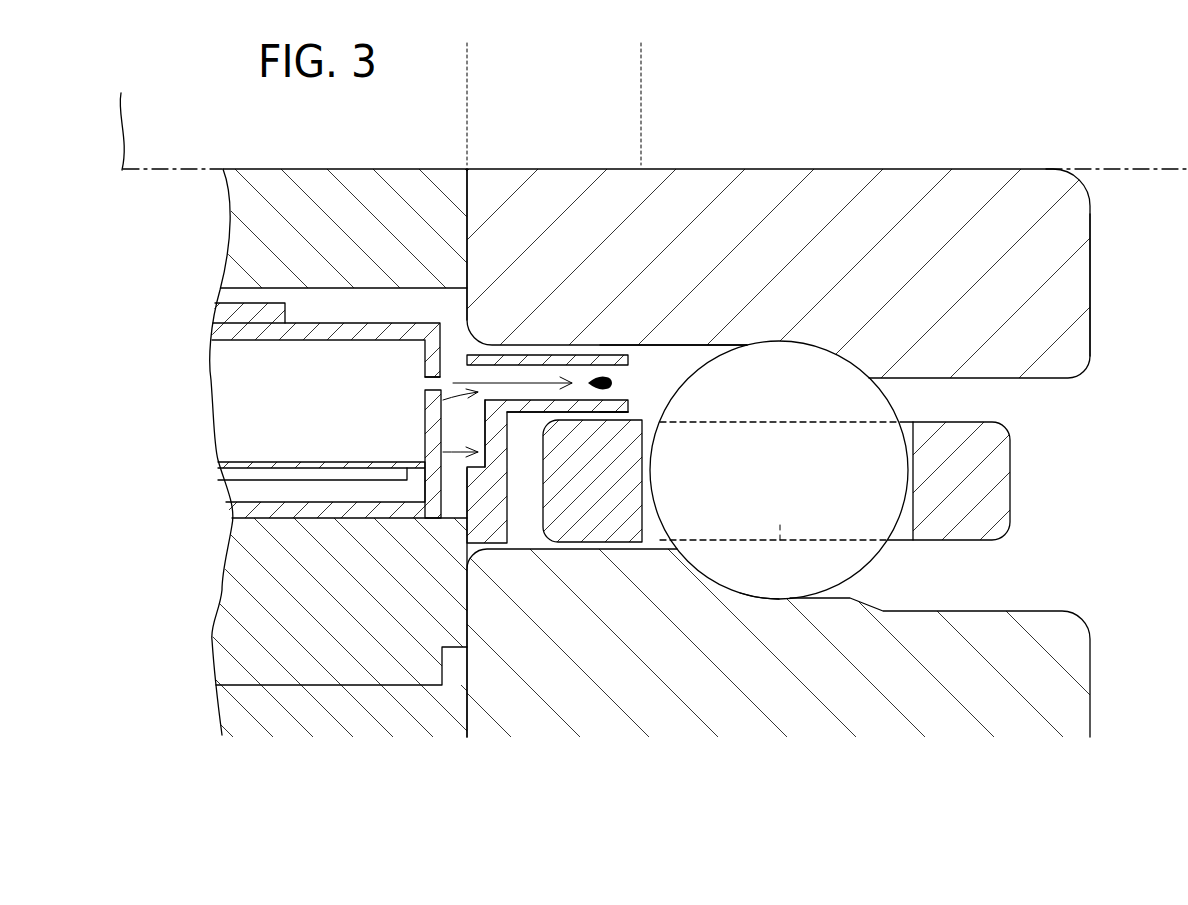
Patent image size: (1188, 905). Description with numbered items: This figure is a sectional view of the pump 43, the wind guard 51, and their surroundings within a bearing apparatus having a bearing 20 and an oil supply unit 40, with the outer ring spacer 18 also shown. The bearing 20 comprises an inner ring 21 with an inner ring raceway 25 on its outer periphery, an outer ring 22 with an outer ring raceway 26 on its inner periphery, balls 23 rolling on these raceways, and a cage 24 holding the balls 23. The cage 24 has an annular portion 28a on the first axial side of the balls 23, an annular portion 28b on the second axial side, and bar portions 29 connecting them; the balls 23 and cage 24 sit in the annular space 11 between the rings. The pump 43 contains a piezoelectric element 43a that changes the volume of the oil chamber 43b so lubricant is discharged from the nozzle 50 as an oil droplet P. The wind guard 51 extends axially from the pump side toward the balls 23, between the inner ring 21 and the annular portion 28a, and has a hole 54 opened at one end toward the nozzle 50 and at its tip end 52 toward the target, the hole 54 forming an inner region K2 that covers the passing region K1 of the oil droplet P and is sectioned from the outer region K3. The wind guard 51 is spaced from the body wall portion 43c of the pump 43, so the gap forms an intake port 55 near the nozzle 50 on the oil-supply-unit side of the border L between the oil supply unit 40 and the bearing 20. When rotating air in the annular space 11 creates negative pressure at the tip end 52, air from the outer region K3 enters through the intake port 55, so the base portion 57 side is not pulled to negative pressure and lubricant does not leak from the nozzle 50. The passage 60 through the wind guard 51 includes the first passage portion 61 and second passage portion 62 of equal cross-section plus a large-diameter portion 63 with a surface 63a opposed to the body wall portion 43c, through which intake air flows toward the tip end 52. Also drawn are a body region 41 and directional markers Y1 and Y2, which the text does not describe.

The annular space 11 is at (527, 529).
The outer ring spacer 18 is at (410, 702).
The bearing 20 is at (852, 163).
The inner ring 21 is at (1065, 278).
The outer ring 22 is at (1045, 665).
The balls 23 is at (752, 570).
The cage 24 is at (1026, 460).
The inner ring raceway 25 is at (794, 340).
The outer ring raceway 26 is at (730, 580).
The annular portion 28a is at (607, 517).
The annular portion 28b is at (993, 500).
The bar portions 29 is at (780, 540).
The oil supply unit 40 is at (322, 697).
The body portion 41 is at (383, 625).
The pump 43 is at (322, 310).
The piezoelectric element 43a is at (265, 480).
The oil chamber 43b is at (292, 415).
The body wall portion 43c is at (433, 440).
The nozzle 50 is at (433, 377).
The wind guard 51 is at (582, 341).
The tip end 52 is at (630, 384).
The hole 54 is at (640, 362).
The intake port 55 is at (460, 328).
The base portion 57 is at (503, 407).
The passage 60 is at (425, 396).
The first passage portion 61 is at (622, 397).
The second passage portion 62 is at (552, 351).
The large-diameter portion 63 is at (443, 452).
The surface 63a is at (483, 428).
The passing region K1 is at (527, 369).
The inner region K2 is at (582, 391).
The outer region K3 is at (501, 335).
The oil droplet P is at (604, 376).
The border L is at (467, 680).
The axial direction Y1 is at (644, 53).
The axial direction Y2 is at (470, 53).